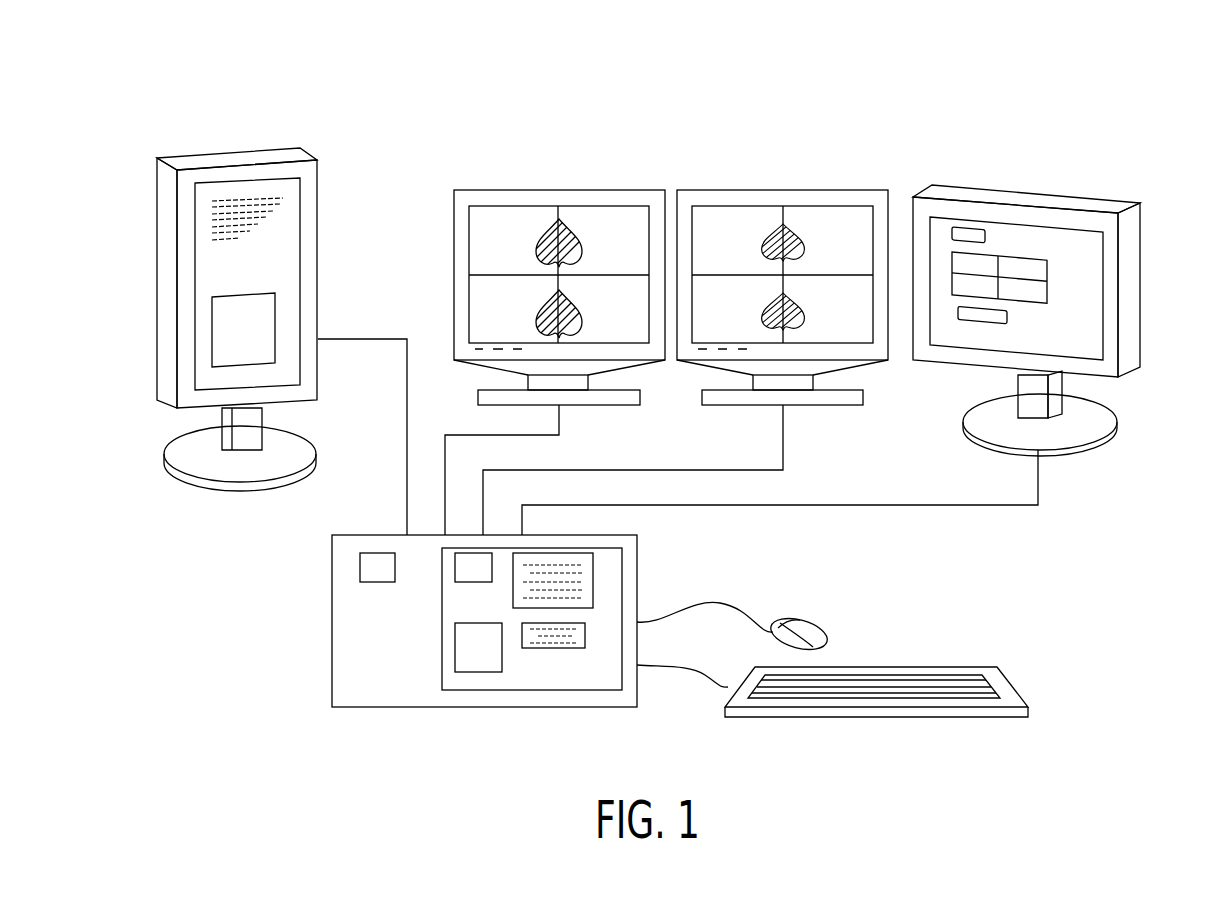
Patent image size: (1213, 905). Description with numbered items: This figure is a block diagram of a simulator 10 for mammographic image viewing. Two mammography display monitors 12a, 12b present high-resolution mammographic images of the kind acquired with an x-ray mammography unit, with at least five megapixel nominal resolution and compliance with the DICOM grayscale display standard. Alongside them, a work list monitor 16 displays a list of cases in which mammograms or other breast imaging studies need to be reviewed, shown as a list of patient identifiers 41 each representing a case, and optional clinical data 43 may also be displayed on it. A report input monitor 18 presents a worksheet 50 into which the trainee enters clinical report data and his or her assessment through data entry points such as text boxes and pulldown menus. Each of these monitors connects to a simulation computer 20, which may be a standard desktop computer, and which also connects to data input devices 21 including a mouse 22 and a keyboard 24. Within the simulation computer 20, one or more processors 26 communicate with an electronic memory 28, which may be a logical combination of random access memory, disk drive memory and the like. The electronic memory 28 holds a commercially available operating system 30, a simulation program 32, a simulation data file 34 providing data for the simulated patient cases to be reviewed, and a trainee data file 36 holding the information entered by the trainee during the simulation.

The simulator 10 is at (1083, 92).
The mammography display monitor 12a is at (566, 122).
The mammography display monitor 12b is at (789, 122).
The work list monitor 16 is at (221, 146).
The report input monitor 18 is at (1089, 194).
The simulation computer 20 is at (314, 627).
The data input devices 21 is at (999, 611).
The mouse 22 is at (806, 627).
The keyboard 24 is at (878, 665).
The processor 26 is at (377, 568).
The electronic memory 28 is at (442, 638).
The operating system 30 is at (472, 570).
The simulation program 32 is at (475, 657).
The simulation data file 34 is at (552, 582).
The trainee data file 36 is at (557, 635).
The patient identifiers 41 is at (258, 206).
The clinical data 43 is at (230, 335).
The worksheet 50 is at (1083, 295).